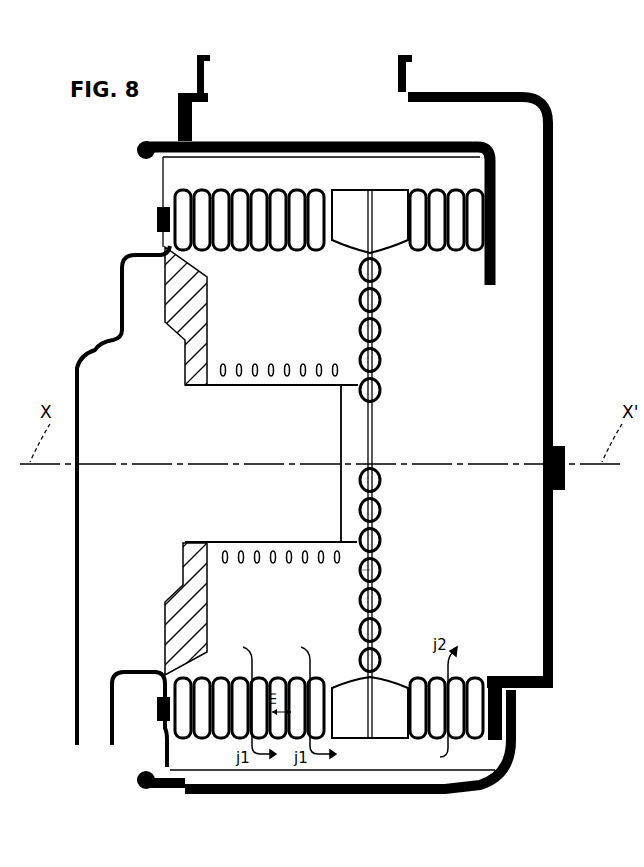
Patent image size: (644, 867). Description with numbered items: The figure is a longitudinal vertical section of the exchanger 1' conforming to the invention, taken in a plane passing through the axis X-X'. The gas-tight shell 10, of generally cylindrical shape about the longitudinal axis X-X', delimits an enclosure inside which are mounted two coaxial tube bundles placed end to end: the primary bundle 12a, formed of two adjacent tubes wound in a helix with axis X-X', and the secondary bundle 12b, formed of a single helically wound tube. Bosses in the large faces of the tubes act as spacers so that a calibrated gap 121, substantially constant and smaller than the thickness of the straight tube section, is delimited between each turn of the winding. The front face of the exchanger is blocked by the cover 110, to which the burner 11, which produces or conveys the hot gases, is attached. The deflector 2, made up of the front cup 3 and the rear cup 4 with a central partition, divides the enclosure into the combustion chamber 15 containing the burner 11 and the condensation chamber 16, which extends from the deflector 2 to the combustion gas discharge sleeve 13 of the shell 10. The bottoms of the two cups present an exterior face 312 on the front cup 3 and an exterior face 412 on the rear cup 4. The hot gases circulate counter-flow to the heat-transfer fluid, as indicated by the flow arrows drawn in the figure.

The gas-tight shell 10 is at (560, 162).
The exchanger conforming to the invention 1' is at (605, 202).
The combustion gas discharge sleeve 13 is at (414, 74).
The primary tube bundle 12a is at (170, 187).
The secondary tube bundle 12b is at (410, 187).
The cover 110 is at (140, 300).
The gap 121 is at (210, 740).
The combustion chamber 15 is at (285, 324).
The burner 11 is at (285, 436).
The condensation chamber 16 is at (472, 598).
The deflector 2 is at (388, 330).
The rear cup 4 is at (388, 538).
The exterior face of the rear cup bottom 412 is at (383, 570).
The front cup 3 is at (360, 570).
The exterior face of the front cup bottom 312 is at (357, 600).